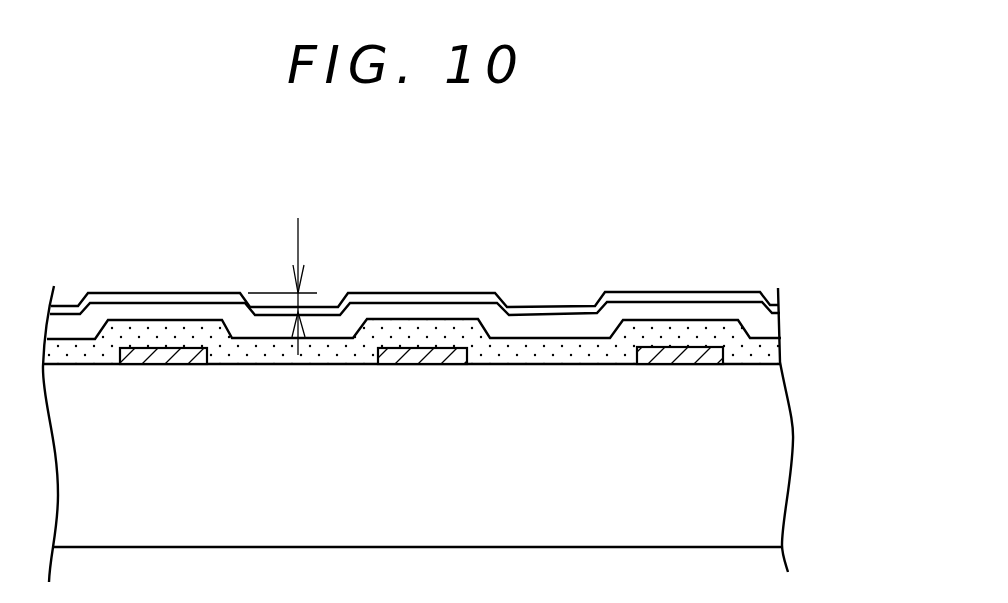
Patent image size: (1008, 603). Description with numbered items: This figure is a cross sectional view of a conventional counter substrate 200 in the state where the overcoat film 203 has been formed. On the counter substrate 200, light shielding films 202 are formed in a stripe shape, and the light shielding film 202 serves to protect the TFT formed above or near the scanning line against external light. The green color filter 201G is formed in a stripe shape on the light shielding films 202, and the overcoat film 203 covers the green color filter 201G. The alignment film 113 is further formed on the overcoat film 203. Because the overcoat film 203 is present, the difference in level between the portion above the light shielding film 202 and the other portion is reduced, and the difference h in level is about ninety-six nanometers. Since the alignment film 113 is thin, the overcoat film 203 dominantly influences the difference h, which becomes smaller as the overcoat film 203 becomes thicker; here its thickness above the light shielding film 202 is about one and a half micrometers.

The counter substrate 200 is at (775, 467).
The light shielding film 202 is at (677, 350).
The green color filter 201G is at (468, 330).
The overcoat film 203 is at (410, 312).
The alignment film 113 is at (742, 292).
The difference in level h is at (282, 286).